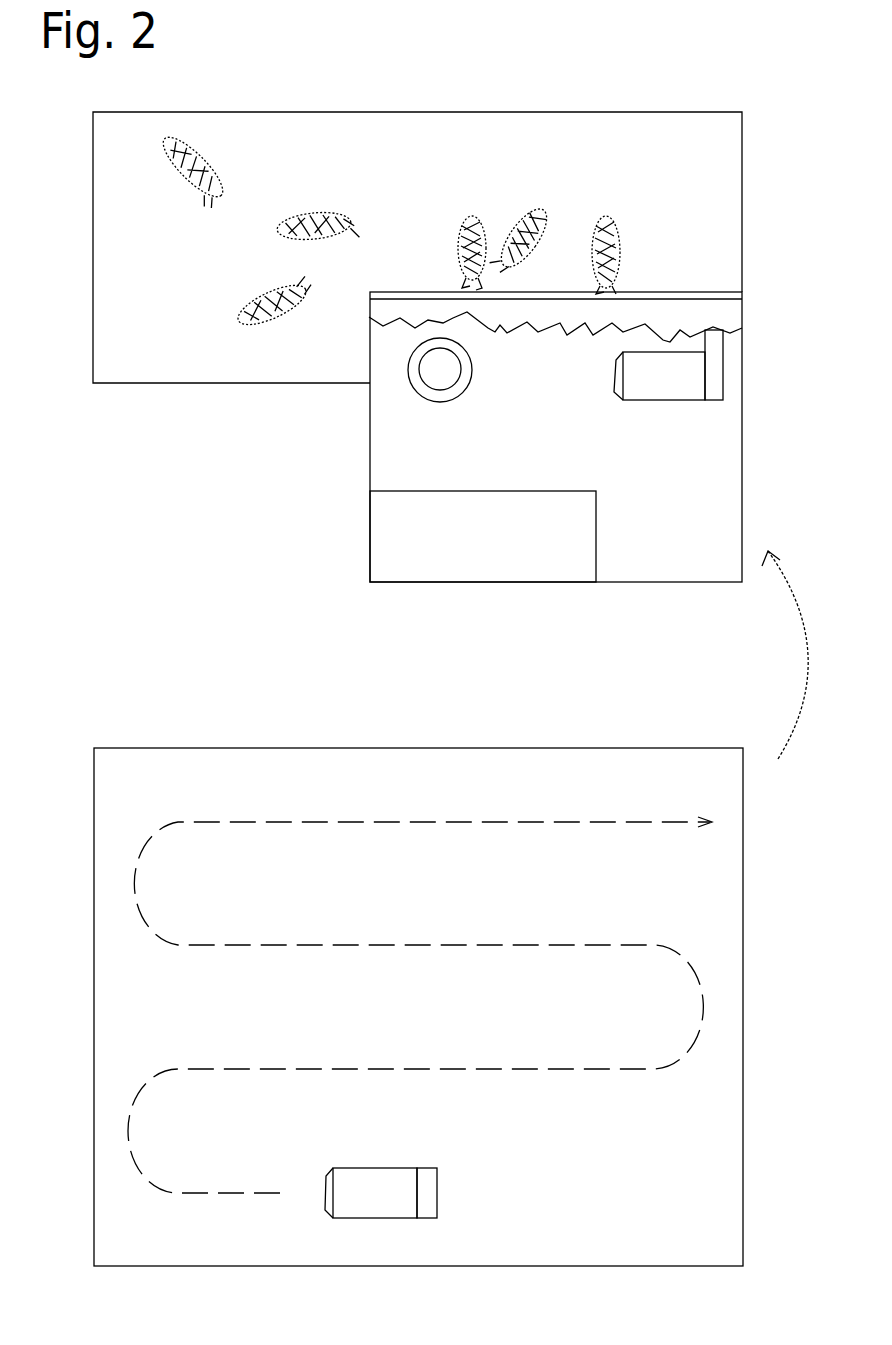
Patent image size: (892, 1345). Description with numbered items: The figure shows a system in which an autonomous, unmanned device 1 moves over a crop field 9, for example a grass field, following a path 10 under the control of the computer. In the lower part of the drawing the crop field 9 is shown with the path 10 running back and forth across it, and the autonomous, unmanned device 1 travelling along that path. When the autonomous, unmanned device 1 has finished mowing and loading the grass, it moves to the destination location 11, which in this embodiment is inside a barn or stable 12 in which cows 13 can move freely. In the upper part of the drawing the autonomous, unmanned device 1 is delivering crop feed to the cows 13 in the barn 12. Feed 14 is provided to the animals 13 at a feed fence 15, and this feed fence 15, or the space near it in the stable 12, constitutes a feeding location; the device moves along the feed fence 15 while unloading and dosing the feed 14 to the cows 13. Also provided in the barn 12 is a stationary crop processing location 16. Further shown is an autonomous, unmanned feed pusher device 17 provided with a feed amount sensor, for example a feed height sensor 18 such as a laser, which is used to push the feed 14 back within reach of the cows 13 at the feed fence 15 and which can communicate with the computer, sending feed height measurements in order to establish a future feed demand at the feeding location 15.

The autonomous, unmanned device 1 is at (650, 408).
The crop field 9 is at (700, 1152).
The path 10 is at (355, 945).
The destination location 11 is at (750, 432).
The barn 12 is at (742, 221).
The cows 13 is at (297, 211).
The feed 14 is at (710, 306).
The feed fence 15 is at (665, 291).
The stationary crop processing location 16 is at (466, 536).
The autonomous, unmanned feed pusher device 17 is at (446, 405).
The feed height sensor 18 is at (443, 352).